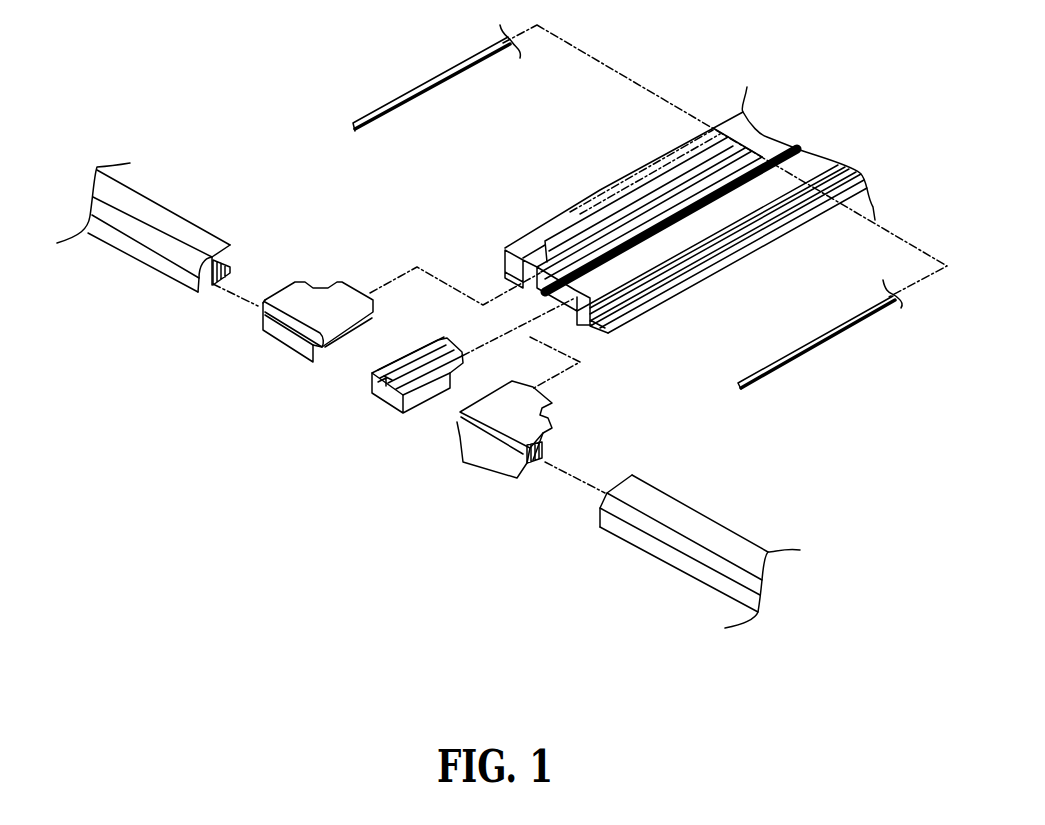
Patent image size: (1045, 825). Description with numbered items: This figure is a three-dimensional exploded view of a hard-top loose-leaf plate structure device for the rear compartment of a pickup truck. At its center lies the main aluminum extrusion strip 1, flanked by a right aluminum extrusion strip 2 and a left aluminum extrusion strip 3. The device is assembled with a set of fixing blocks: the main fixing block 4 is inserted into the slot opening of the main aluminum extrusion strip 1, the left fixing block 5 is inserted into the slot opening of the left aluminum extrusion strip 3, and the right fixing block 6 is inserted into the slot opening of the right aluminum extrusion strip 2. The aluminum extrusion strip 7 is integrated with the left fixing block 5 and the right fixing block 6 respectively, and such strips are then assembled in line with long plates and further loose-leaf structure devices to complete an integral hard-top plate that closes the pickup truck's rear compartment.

The main aluminum extrusion strip 1 is at (543, 298).
The right aluminum extrusion strip 2 is at (637, 270).
The left aluminum extrusion strip 3 is at (548, 241).
The main fixing block 4 is at (388, 397).
The left fixing block 5 is at (288, 337).
The right fixing block 6 is at (503, 418).
The aluminum extrusion strip 7 is at (148, 262).